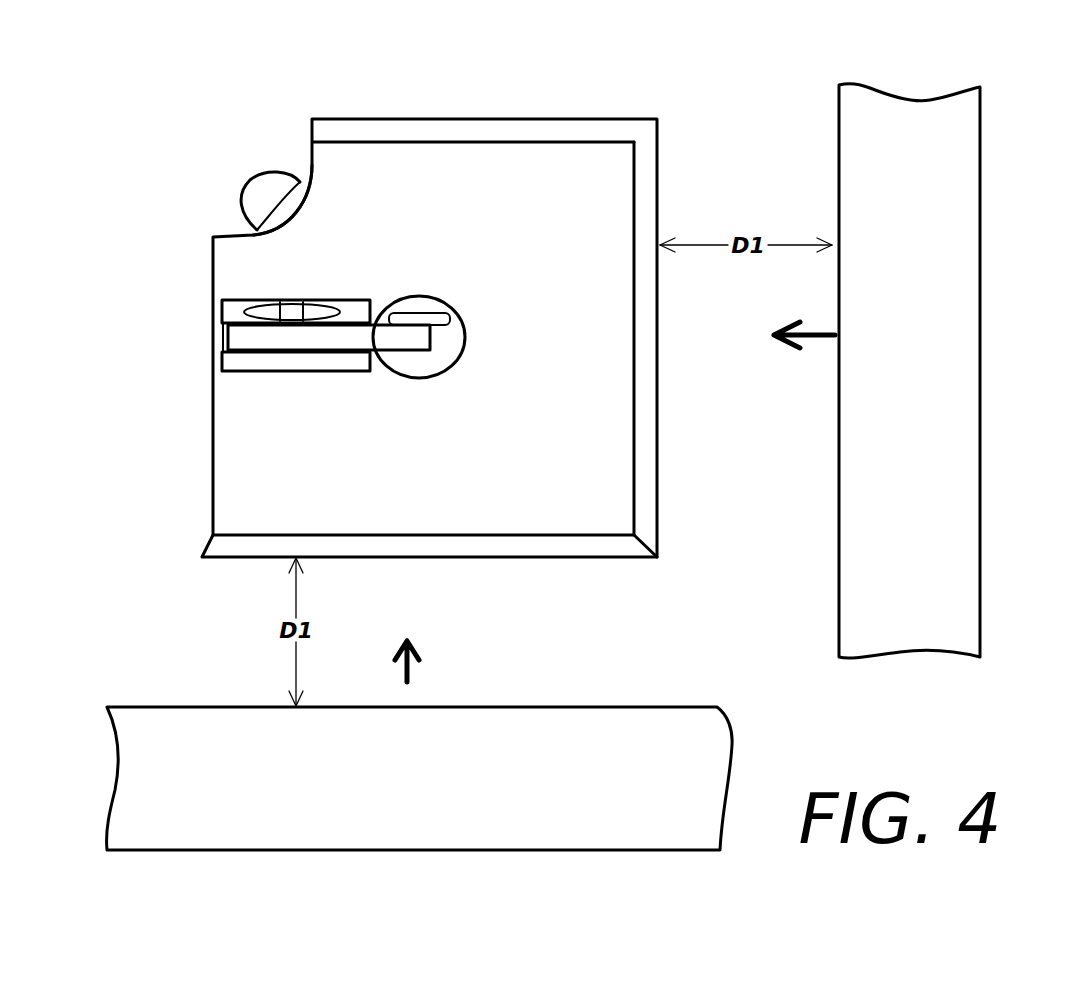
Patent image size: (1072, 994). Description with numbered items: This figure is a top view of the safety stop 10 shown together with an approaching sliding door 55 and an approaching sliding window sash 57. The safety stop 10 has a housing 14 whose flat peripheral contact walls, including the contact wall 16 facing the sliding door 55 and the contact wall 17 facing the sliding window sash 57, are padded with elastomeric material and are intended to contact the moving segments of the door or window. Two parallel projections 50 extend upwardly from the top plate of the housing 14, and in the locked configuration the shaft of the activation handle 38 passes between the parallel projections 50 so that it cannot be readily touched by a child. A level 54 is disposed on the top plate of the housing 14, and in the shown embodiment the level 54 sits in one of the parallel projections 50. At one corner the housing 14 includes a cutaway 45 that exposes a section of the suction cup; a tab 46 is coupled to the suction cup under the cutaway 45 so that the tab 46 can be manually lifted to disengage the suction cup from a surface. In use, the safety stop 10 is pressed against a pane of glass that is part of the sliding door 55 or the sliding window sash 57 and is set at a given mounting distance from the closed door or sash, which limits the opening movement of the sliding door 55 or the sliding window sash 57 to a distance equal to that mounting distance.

The safety stop 10 is at (435, 314).
The housing 14 is at (412, 143).
The peripheral contact wall 16 is at (635, 388).
The peripheral contact wall 17 is at (580, 538).
The cutaway 45 is at (290, 157).
The tab 46 is at (258, 182).
The level 54 is at (282, 301).
The activation handle 38 is at (257, 337).
The parallel projections 50 is at (267, 362).
The sliding door 55 is at (970, 180).
The sliding window sash 57 is at (567, 727).